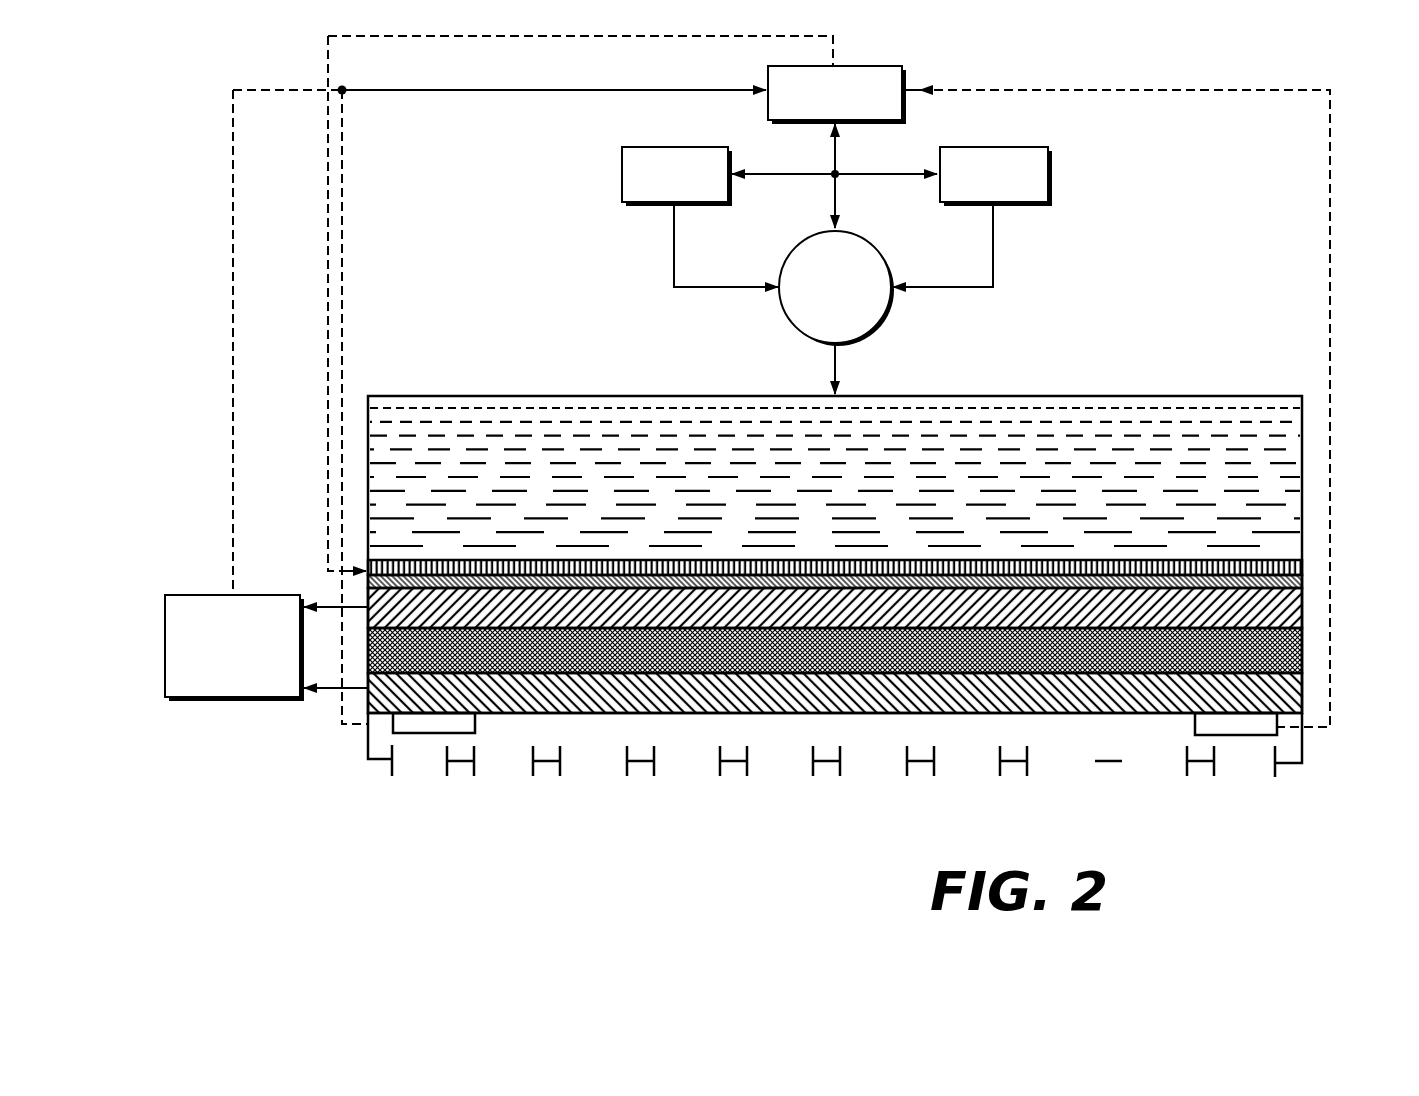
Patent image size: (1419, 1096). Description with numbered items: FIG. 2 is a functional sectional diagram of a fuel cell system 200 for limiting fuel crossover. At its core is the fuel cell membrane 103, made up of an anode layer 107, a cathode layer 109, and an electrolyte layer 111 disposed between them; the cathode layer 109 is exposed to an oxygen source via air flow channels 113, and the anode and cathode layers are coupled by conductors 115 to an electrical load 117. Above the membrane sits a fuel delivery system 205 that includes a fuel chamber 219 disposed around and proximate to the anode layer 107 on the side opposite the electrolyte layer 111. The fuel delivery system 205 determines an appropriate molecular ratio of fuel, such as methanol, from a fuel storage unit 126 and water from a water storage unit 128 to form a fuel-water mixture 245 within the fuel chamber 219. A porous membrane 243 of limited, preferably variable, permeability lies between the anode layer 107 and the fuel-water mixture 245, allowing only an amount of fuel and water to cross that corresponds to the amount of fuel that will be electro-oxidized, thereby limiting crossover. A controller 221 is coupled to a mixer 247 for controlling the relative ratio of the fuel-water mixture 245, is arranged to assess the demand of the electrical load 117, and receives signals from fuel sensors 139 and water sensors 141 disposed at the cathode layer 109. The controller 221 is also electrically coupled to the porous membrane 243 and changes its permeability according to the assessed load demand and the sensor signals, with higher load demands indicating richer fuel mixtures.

The controller 221 is at (887, 66).
The fuel storage unit 126 is at (622, 147).
The water storage unit 128 is at (940, 147).
The mixer 247 is at (880, 330).
The fuel delivery system 205 is at (1297, 212).
The fuel chamber 219 is at (368, 396).
The fuel-water mixture 245 is at (1150, 427).
The porous membrane 243 is at (1278, 556).
The anode layer 107 is at (1302, 598).
The electrolyte layer 111 is at (1302, 642).
The cathode layer 109 is at (1302, 690).
The electrical load 117 is at (165, 595).
The conductors 115 is at (325, 598).
The water sensors 141 is at (418, 735).
The fuel sensors 139 is at (1240, 750).
The fuel cell membrane 103 is at (546, 722).
The air flow channels 113 is at (778, 762).
The fuel cell device 200 is at (1056, 838).